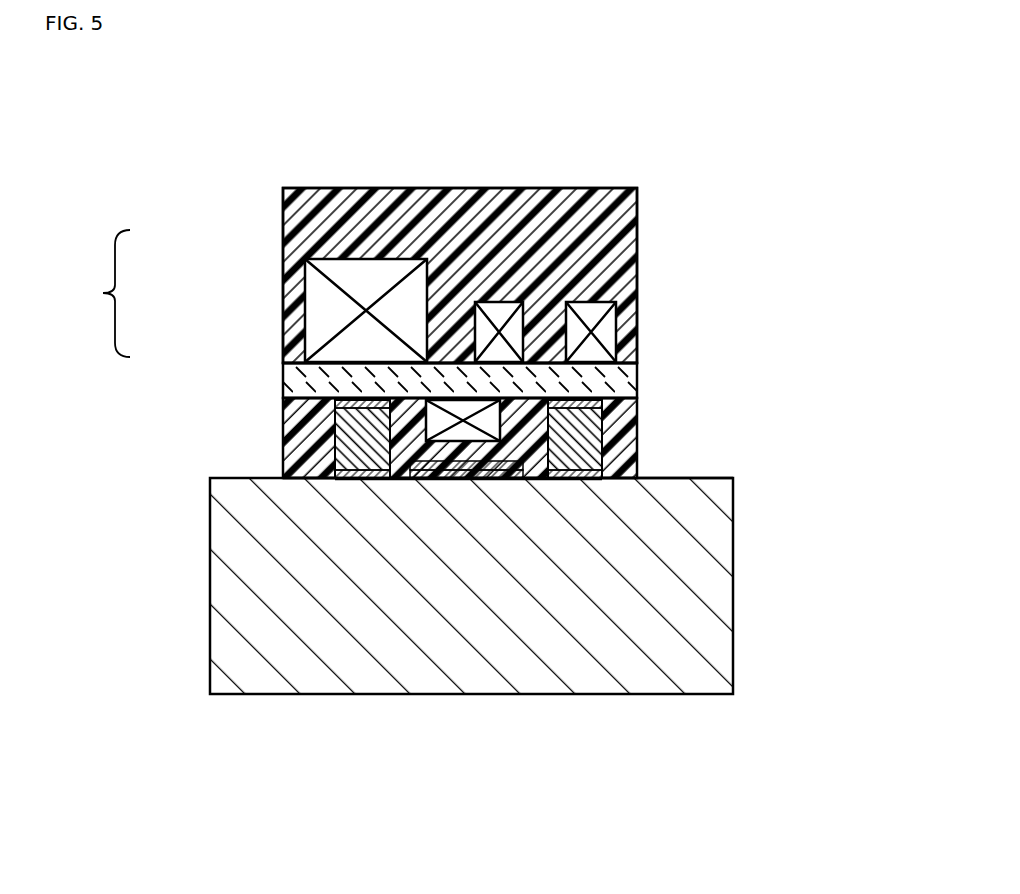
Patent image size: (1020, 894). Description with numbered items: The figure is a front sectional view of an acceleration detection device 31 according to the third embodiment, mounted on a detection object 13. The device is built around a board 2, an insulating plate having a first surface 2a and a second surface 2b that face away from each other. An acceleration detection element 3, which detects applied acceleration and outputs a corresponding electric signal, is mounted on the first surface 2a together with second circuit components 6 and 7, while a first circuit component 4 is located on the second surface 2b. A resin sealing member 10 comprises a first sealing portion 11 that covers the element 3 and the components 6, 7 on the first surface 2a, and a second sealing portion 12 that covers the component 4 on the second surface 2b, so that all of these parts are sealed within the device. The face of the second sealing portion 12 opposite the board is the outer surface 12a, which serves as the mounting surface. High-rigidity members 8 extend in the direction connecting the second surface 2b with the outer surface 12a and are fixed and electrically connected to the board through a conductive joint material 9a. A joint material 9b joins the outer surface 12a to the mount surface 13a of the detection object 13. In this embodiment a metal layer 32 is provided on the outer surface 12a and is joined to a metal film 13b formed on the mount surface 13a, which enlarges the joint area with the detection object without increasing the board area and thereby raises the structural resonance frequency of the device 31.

The board 2 is at (656, 401).
The first surface 2a is at (638, 373).
The second surface 2b is at (637, 388).
The acceleration detection element 3 is at (366, 260).
The first circuit component 4 is at (455, 403).
The second circuit component 6 is at (501, 312).
The second circuit component 7 is at (590, 312).
The high-rigidity member 8 is at (335, 440).
The conductive joint material 9a is at (365, 402).
The joint material 9b is at (360, 478).
The sealing member 10 is at (92, 293).
The first sealing portion 11 is at (283, 262).
The second sealing portion 12 is at (283, 420).
The outer surface 12a is at (540, 479).
The detection object 13 is at (750, 640).
The mount surface 13a is at (703, 478).
The metal film 13b is at (483, 479).
The acceleration detection device 31 is at (303, 176).
The metal layer 32 is at (417, 463).